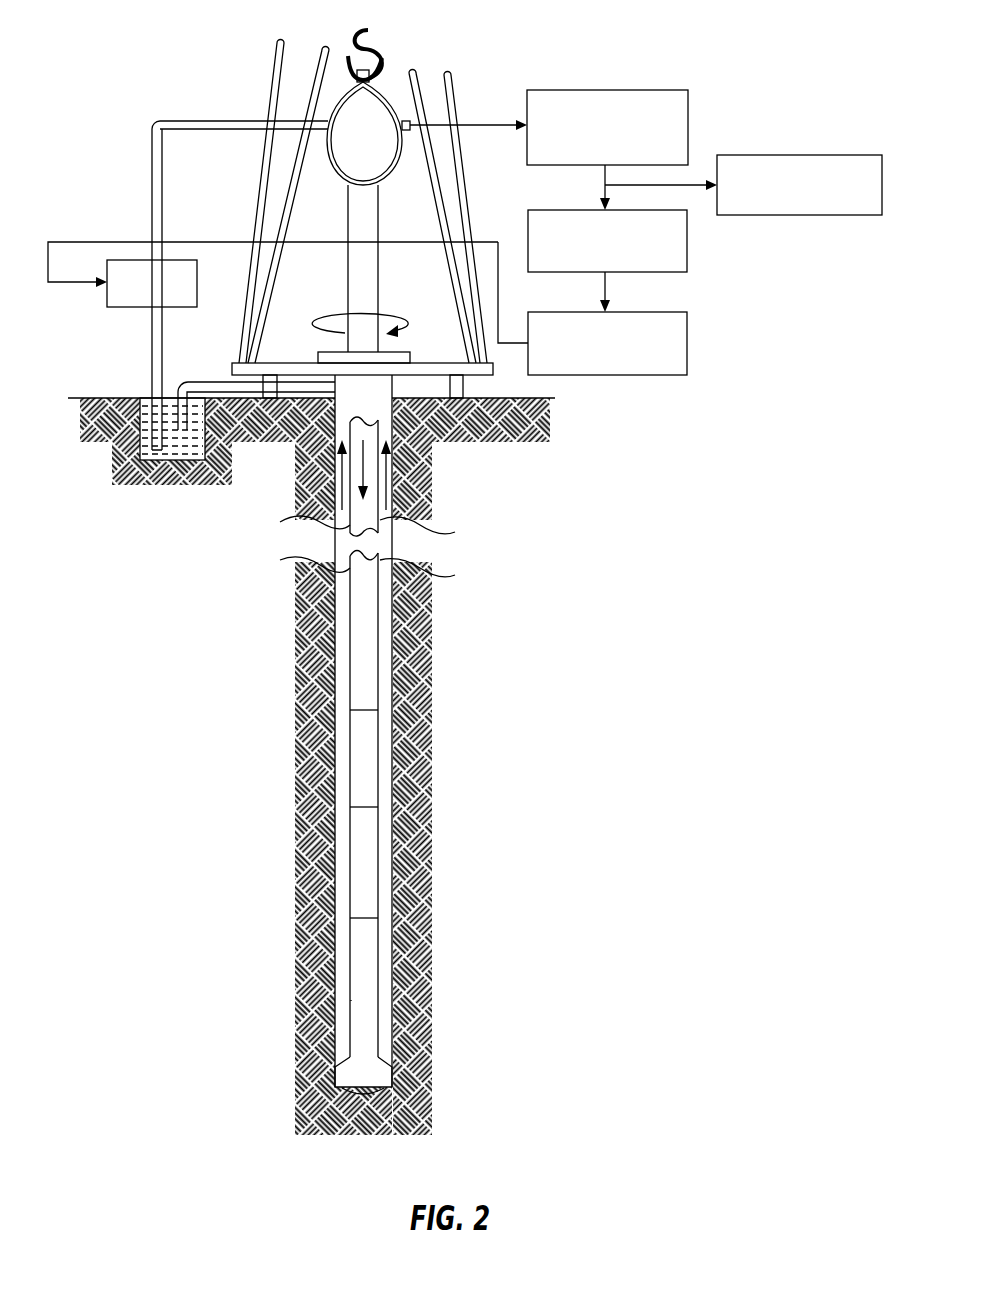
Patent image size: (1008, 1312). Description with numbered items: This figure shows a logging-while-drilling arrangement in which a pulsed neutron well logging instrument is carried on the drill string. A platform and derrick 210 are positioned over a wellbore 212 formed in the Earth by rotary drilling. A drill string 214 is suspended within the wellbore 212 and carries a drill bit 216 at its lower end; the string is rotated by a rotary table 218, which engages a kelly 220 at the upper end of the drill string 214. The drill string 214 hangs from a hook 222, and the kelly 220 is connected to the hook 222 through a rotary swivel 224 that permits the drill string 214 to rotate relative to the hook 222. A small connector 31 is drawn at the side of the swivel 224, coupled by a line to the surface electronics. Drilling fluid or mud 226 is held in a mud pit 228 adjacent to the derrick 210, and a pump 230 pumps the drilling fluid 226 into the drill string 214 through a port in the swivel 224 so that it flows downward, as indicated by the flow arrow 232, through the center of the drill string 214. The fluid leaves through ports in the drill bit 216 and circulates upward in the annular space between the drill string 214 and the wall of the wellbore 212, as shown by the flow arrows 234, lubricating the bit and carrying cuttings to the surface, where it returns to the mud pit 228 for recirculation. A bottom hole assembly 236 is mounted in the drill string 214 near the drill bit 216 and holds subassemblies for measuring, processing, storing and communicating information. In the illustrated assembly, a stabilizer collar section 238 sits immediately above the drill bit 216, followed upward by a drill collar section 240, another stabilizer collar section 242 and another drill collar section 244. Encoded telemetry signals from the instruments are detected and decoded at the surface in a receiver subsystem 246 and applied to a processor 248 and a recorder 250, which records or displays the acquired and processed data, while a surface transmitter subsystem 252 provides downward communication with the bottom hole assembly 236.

The sensor connector 31 is at (406, 130).
The platform and derrick 210 is at (508, 379).
The wellbore 212 is at (392, 520).
The drill string 214 is at (292, 804).
The drill bit 216 is at (357, 1073).
The rotary table 218 is at (402, 352).
The kelly 220 is at (360, 252).
The hook 222 is at (376, 44).
The rotary swivel 224 is at (345, 153).
The drilling fluid 226 is at (186, 462).
The mud pit 228 is at (140, 440).
The pump 230 is at (124, 308).
The flow arrow 232 is at (363, 467).
The flow arrows 234 is at (388, 493).
The bottom hole assembly 236 is at (450, 1060).
The stabilizer collar section 238 is at (360, 967).
The drill collar section 240 is at (360, 872).
The stabilizer collar section 242 is at (362, 777).
The drill collar section 244 is at (350, 667).
The receiver subsystem 246 is at (630, 90).
The processor 248 is at (687, 245).
The recorder 250 is at (802, 155).
The surface transmitter subsystem 252 is at (687, 347).